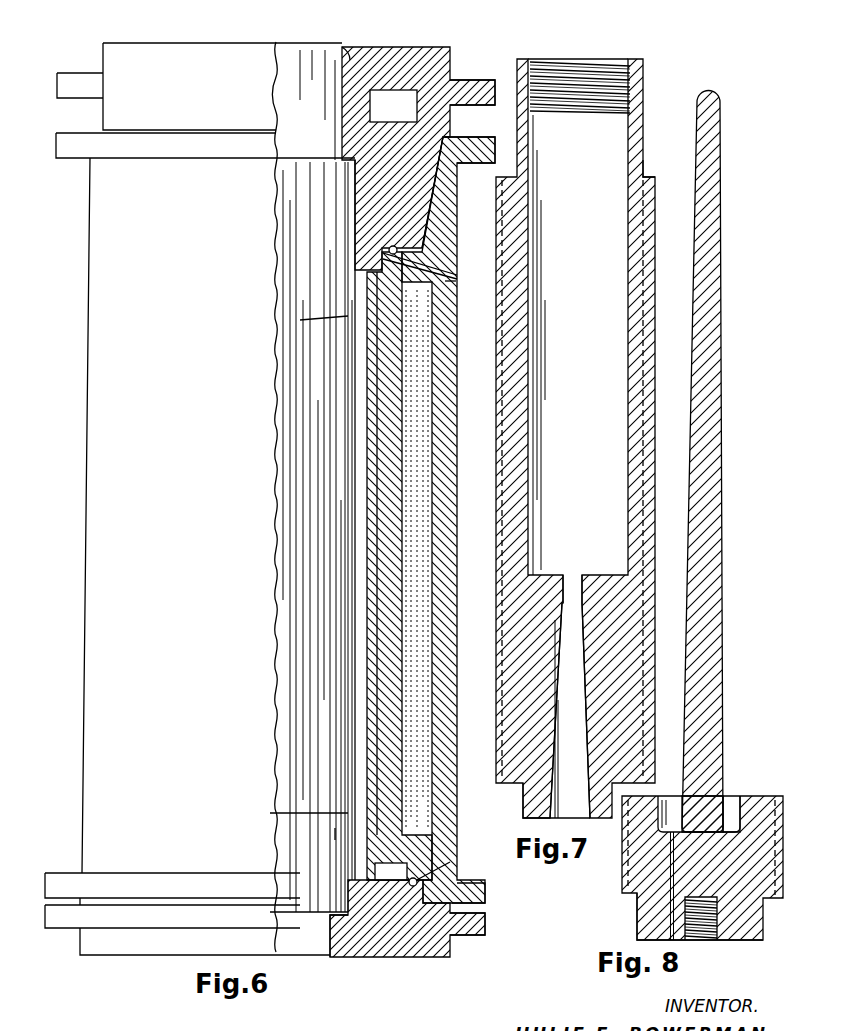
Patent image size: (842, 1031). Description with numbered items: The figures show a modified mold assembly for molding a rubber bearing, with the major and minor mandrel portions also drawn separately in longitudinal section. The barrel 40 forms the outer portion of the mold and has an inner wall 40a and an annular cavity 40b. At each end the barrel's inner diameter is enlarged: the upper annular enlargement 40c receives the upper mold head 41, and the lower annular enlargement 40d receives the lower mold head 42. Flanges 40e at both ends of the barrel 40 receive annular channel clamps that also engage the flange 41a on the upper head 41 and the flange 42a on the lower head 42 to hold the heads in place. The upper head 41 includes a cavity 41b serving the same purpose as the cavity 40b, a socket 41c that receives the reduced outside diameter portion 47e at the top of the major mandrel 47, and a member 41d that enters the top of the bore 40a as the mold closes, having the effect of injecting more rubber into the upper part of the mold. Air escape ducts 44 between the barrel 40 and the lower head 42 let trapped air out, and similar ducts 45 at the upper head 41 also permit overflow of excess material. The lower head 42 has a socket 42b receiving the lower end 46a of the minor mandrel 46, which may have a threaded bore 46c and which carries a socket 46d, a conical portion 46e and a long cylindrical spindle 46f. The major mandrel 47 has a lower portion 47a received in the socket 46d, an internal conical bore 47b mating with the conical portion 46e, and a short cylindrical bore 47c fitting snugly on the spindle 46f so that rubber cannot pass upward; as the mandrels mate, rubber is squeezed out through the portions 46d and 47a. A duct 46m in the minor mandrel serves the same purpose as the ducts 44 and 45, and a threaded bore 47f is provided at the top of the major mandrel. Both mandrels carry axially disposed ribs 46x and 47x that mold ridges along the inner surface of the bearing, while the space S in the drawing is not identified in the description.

In FIG. 6, the barrel 40 is at (450, 320).
In FIG. 6, the inner wall 40a is at (377, 382).
In FIG. 6, the annular cavity 40b is at (423, 378).
In FIG. 6, the upper annular enlargement 40c is at (430, 215).
In FIG. 6, the lower annular enlargement 40d is at (420, 878).
In FIG. 6, the flange 40e is at (483, 145).
In FIG. 6, the upper mold head 41 is at (424, 47).
In FIG. 6, the flange 41a is at (460, 88).
In FIG. 6, the cavity 41b is at (393, 90).
In FIG. 6, the socket 41c is at (346, 50).
In FIG. 6, the member 41d is at (450, 286).
In FIG. 6, the lower mold head 42 is at (402, 945).
In FIG. 6, the flange 42a is at (472, 930).
In FIG. 6, the socket 42b is at (337, 940).
In FIG. 6, the air escape ducts 44 is at (417, 880).
In FIG. 6, the ducts 45 is at (435, 249).
In FIG. 6, the minor mandrel 46 is at (300, 858).
In FIG. 8, the minor mandrel 46 is at (783, 797).
In FIG. 6, the lower end 46a is at (277, 935).
In FIG. 8, the lower end 46a is at (640, 925).
In FIG. 8, the threaded bore 46c is at (700, 942).
In FIG. 8, the socket 46d is at (740, 797).
In FIG. 8, the conical portion 46e is at (728, 745).
In FIG. 7, the cylindrical spindle 46f is at (722, 465).
In FIG. 8, the duct 46m is at (672, 905).
In FIG. 6, the rib 46x is at (340, 832).
In FIG. 8, the rib 46x is at (628, 878).
In FIG. 6, the major mandrel 47 is at (285, 365).
In FIG. 7, the major mandrel 47 is at (640, 460).
In FIG. 7, the lower end portion 47a is at (540, 798).
In FIG. 7, the internal conical bore 47b is at (570, 675).
In FIG. 7, the short cylindrical bore 47c is at (577, 582).
In FIG. 7, the reduced outside diameter portion 47e is at (638, 142).
In FIG. 7, the threaded bore 47f is at (585, 67).
In FIG. 6, the rib 47x is at (348, 316).
In FIG. 7, the rib 47x is at (652, 218).
In FIG. 6, the space / seal S is at (373, 462).